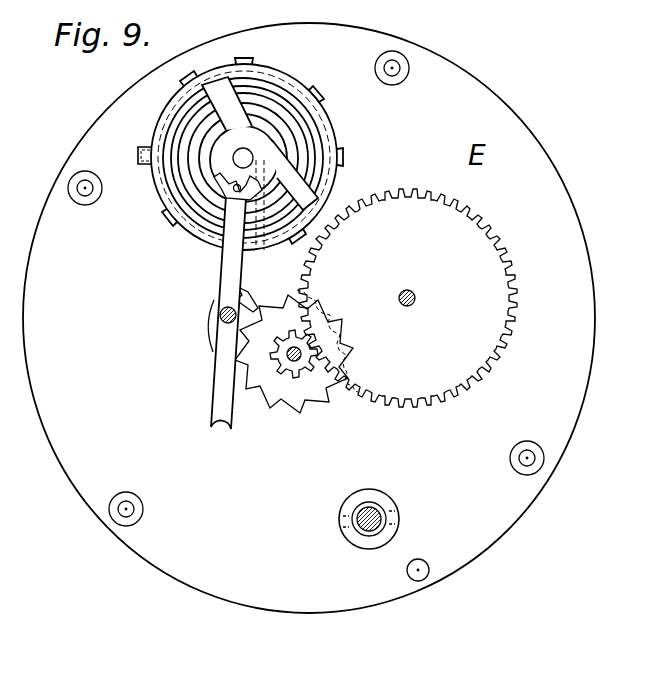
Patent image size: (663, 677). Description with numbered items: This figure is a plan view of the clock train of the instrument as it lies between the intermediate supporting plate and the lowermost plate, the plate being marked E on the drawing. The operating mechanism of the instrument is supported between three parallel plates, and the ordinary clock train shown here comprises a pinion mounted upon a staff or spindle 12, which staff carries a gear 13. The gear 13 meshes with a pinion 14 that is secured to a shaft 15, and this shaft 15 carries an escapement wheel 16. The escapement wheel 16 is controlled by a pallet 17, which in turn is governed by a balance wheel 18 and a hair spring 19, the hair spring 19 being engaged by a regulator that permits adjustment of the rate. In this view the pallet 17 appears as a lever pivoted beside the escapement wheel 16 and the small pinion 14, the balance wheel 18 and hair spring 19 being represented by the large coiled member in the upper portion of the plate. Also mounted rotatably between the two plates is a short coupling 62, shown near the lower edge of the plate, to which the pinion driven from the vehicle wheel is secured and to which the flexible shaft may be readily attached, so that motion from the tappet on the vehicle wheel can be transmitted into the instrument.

The staff or spindle 12 is at (407, 306).
The gear 13 is at (518, 312).
The pinion 14 is at (358, 438).
The shaft 15 is at (294, 368).
The escapement wheel 16 is at (270, 395).
The pallet 17 is at (222, 315).
The balance wheel 18 is at (336, 133).
The hair spring 19 is at (182, 137).
The short coupling 62 is at (400, 500).